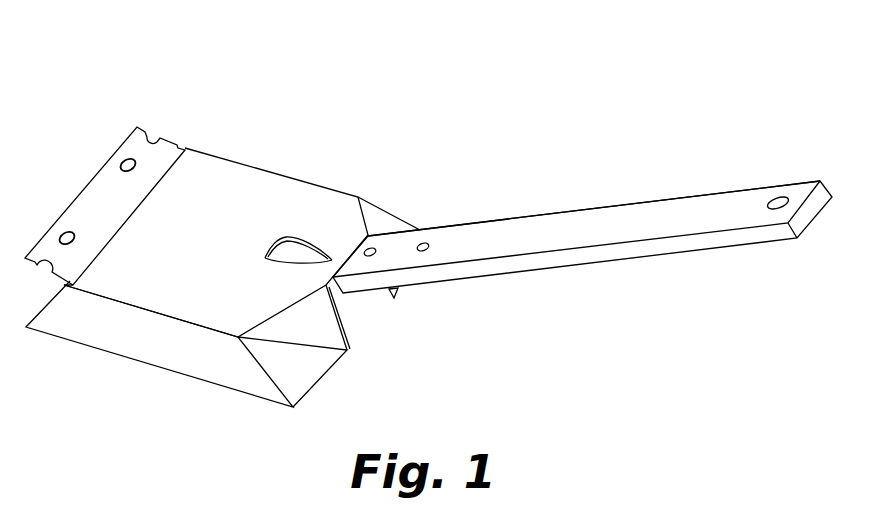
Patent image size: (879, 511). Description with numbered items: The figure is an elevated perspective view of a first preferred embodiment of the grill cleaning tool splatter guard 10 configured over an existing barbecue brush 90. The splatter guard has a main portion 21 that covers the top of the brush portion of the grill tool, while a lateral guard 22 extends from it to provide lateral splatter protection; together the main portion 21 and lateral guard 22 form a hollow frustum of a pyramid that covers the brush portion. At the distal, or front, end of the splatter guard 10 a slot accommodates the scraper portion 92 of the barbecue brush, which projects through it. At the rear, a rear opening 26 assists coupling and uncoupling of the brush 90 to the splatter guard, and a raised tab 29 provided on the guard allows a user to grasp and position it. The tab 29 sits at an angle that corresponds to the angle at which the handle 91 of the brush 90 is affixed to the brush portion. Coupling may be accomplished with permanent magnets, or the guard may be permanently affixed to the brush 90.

The grill cleaning tool splatter guard 10 is at (317, 92).
The main portion 21 is at (242, 242).
The lateral guard 22 is at (162, 355).
The rear opening 26 is at (357, 338).
The raised tab 29 is at (288, 237).
The brush 90 is at (693, 202).
The handle 91 is at (515, 230).
The scraper portion 92 is at (107, 190).